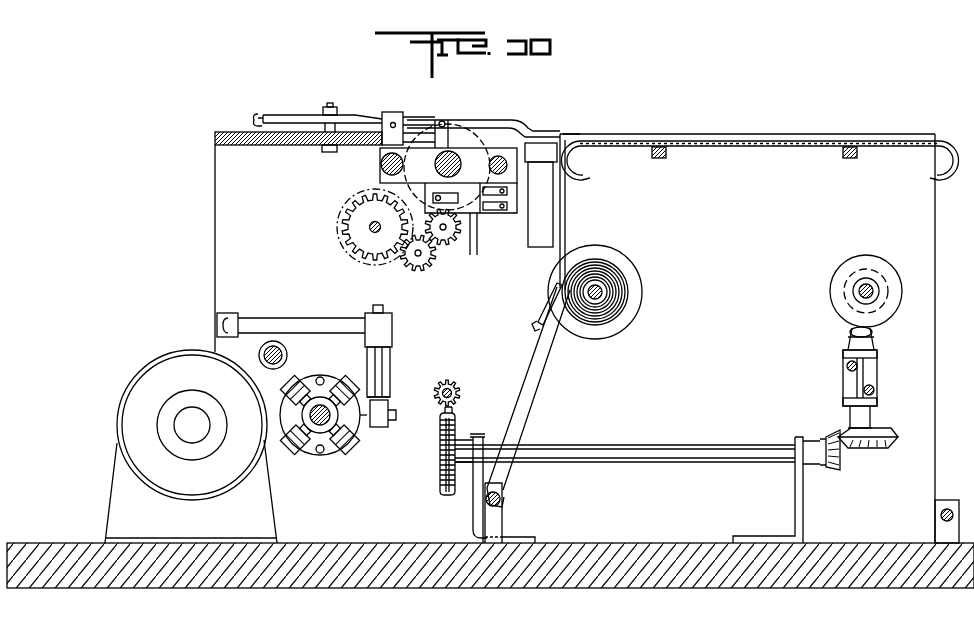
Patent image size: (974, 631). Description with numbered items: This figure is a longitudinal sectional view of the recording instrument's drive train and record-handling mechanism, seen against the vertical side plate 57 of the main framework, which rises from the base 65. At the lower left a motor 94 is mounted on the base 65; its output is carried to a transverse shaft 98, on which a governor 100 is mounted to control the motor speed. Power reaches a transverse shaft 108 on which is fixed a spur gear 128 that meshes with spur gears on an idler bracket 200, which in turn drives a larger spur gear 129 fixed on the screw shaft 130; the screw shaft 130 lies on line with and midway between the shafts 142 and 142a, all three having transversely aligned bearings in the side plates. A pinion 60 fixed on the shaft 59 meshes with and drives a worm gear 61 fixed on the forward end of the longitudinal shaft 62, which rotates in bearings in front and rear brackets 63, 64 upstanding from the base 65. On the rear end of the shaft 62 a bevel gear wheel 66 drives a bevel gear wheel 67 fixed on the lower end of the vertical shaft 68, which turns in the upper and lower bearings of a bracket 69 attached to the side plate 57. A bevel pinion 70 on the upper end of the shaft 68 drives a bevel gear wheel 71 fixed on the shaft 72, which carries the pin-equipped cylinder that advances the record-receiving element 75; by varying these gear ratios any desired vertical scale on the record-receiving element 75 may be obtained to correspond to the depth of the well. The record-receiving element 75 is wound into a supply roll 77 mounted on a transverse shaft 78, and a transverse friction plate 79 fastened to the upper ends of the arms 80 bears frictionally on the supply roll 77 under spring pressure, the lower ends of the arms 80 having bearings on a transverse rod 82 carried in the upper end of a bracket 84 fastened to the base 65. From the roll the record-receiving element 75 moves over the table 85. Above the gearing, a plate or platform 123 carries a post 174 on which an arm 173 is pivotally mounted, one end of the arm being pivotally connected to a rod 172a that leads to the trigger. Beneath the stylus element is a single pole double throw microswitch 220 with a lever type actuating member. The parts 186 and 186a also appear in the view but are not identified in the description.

The vertical side plate 57 is at (215, 268).
The shaft 59 is at (460, 393).
The pinion 60 is at (455, 384).
The worm gear 61 is at (457, 428).
The longitudinal shaft 62 is at (689, 445).
The front bracket 63 is at (475, 505).
The rear bracket 64 is at (795, 503).
The base 65 is at (672, 544).
The bevel gear wheel 66 is at (835, 467).
The bevel gear wheel 67 is at (886, 448).
The vertical shaft 68 is at (866, 363).
The bracket 69 is at (844, 388).
The bevel pinion 70 is at (875, 329).
The bevel gear wheel 71 is at (900, 290).
The shaft 72 is at (858, 293).
The record-receiving element 75 is at (568, 225).
The supply roll 77 is at (622, 277).
The transverse shaft 78 is at (603, 296).
The transverse friction plate 79 is at (556, 330).
The arms 80 is at (535, 394).
The transverse rod 82 is at (506, 497).
The bracket 84 is at (505, 518).
The table 85 is at (788, 152).
The motor 94 is at (120, 408).
The transverse shaft 98 is at (317, 452).
The governor 100 is at (346, 448).
The transverse shaft 108 is at (369, 227).
The plate, or platform 123 is at (215, 145).
The spur gear 128 is at (362, 248).
The larger spur gear 129 is at (362, 193).
The screw shaft 130 is at (440, 162).
The shaft 142 is at (498, 157).
The shaft 142a is at (385, 167).
The rod 172a is at (261, 119).
The arm 173 is at (372, 120).
The post 174 is at (329, 104).
The bar 186 is at (470, 120).
The plate 186a is at (569, 136).
The idler bracket 200 is at (434, 260).
The microswitch 220 is at (478, 214).